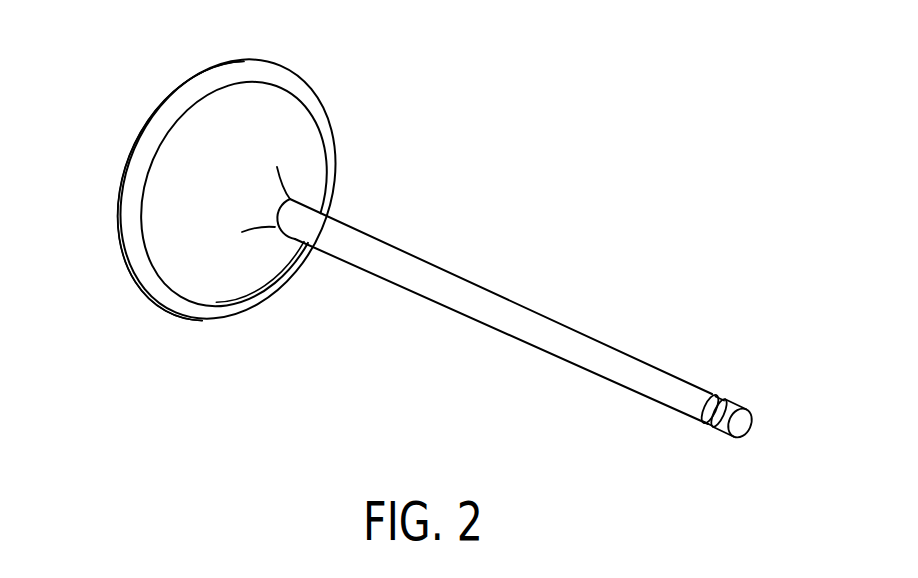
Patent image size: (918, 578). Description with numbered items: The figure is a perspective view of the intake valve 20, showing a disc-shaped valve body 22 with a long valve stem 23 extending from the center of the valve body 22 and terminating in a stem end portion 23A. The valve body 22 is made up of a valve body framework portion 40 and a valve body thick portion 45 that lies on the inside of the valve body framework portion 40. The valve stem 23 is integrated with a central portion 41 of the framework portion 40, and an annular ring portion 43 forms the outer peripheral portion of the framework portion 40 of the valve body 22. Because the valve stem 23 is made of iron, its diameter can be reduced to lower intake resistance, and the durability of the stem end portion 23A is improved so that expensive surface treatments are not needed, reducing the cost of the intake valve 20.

The intake valve 20 is at (450, 83).
The valve body 22 is at (403, 52).
The valve stem 23 is at (343, 222).
The stem end portion 23A is at (748, 422).
The valve body framework portion 40 is at (310, 78).
The central portion 41 is at (295, 222).
The annular ring portion 43 is at (150, 148).
The valve body thick portion 45 is at (293, 142).